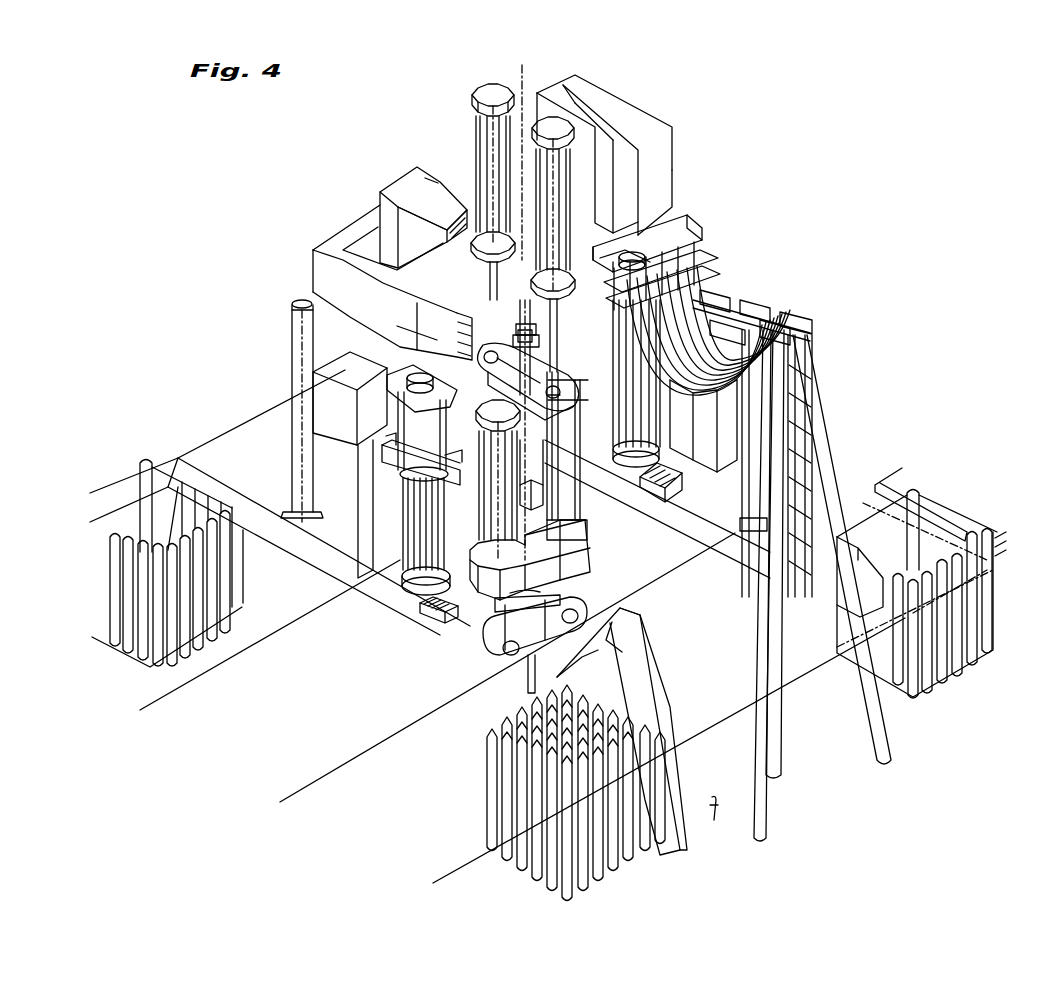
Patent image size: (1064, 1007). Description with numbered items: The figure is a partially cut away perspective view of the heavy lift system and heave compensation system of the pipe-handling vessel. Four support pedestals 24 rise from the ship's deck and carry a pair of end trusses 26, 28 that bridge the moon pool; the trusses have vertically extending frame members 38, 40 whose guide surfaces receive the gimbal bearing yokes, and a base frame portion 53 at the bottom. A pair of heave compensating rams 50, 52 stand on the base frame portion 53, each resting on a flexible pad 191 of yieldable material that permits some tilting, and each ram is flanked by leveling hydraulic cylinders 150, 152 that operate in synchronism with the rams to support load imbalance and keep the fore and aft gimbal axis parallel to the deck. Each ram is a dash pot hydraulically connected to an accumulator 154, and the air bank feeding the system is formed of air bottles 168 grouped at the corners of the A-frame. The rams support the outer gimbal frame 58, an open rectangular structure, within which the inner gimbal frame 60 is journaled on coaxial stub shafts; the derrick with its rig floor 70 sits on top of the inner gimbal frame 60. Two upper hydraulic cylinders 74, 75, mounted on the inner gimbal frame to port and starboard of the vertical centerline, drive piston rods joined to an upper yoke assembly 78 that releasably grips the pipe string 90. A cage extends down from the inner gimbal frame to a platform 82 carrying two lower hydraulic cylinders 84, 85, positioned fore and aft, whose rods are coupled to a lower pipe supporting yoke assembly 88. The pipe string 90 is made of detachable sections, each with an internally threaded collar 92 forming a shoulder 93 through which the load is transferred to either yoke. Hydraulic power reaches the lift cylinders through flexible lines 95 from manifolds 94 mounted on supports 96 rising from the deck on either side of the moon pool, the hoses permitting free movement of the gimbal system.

The support pedestal 24 is at (683, 772).
The end truss 26 is at (822, 480).
The end truss 28 is at (266, 420).
The frame member 38 is at (610, 125).
The frame member 40 is at (400, 185).
The heave compensating ram 50 is at (620, 462).
The heave compensating ram 52 is at (402, 567).
The base frame portion 53 is at (422, 604).
The outer gimbal frame 58 is at (376, 210).
The inner gimbal frame 60 is at (695, 222).
The rig floor 70 is at (520, 692).
The upper hydraulic cylinder 74 is at (545, 130).
The upper hydraulic cylinder 75 is at (470, 90).
The upper yoke assembly 78 is at (492, 380).
The platform 82 is at (578, 562).
The lower hydraulic cylinder 84 is at (570, 372).
The lower hydraulic cylinder 85 is at (485, 434).
The lower pipe supporting yoke assembly 88 is at (565, 620).
The pipe string 90 is at (548, 460).
The internally threaded collar 92 is at (548, 436).
The shoulder 93 is at (498, 478).
The manifold 94 is at (785, 330).
The flexible lines 95 is at (722, 297).
The support 96 is at (776, 640).
The hydraulic cylinder 150 is at (600, 325).
The hydraulic cylinder 152 is at (353, 570).
The accumulator 154 is at (292, 338).
The fuel rods 168 is at (510, 772).
The flexible pad 191 is at (385, 448).